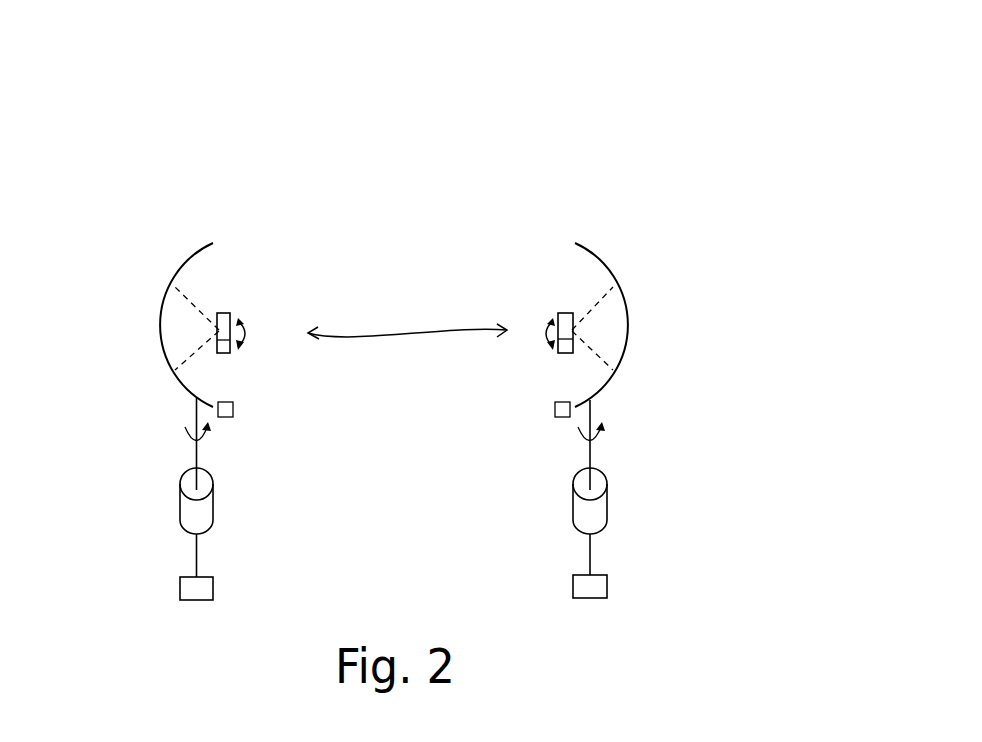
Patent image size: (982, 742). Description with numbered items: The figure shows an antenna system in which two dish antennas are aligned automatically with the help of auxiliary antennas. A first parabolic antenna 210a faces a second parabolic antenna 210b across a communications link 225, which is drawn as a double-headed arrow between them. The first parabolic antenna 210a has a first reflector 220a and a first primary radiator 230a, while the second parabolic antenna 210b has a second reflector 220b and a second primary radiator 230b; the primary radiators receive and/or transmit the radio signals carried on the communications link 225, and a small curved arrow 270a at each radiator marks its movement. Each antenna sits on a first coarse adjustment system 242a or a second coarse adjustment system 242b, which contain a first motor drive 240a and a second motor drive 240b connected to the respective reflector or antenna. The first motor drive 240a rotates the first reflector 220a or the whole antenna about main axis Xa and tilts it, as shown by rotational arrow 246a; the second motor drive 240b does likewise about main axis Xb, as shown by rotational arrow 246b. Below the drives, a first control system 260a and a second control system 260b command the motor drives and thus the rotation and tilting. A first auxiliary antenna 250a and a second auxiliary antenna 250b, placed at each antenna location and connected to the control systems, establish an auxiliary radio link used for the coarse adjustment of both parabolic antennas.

The first parabolic antenna 210a is at (182, 245).
The second parabolic antenna 210b is at (647, 242).
The first reflector 220a is at (166, 293).
The second reflector 220b is at (628, 317).
The first primary radiator 230a is at (222, 313).
The second primary radiator 230b is at (565, 313).
The feed rotation 270a is at (232, 349).
The first auxiliary antenna 250a is at (233, 410).
The second auxiliary antenna 250b is at (561, 418).
The rotational arrow 246a is at (210, 436).
The rotational arrow 246b is at (623, 437).
The first coarse adjustment system 242a is at (162, 500).
The second coarse adjustment system 242b is at (622, 502).
The first motor drive 240a is at (197, 528).
The second motor drive 240b is at (607, 527).
The first control system 260a is at (197, 585).
The second control system 260b is at (590, 585).
The communications link 225 is at (567, 160).